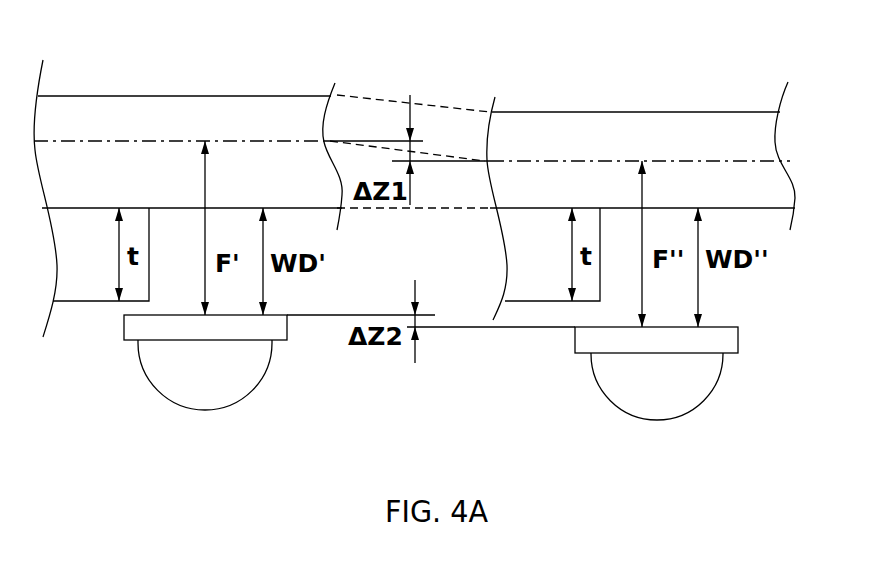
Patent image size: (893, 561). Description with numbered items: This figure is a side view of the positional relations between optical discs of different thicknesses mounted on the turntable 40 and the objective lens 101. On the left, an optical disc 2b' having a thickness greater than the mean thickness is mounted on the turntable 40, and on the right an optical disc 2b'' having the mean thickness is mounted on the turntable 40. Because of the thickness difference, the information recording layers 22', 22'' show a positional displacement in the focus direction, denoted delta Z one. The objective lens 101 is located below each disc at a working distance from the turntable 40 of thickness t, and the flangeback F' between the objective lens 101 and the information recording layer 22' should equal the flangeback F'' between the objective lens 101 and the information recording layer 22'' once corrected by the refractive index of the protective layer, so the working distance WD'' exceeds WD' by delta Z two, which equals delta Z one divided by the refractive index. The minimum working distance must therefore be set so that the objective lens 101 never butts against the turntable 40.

The optical disc having a thickness greater than the mean thickness 2b' is at (188, 172).
The optical disc having a mean thickness 2b'' is at (641, 170).
The information recording layer 22' is at (178, 90).
The information recording layer 22'' is at (640, 110).
The turntable 40 is at (67, 268).
The objective lens 101 is at (182, 377).